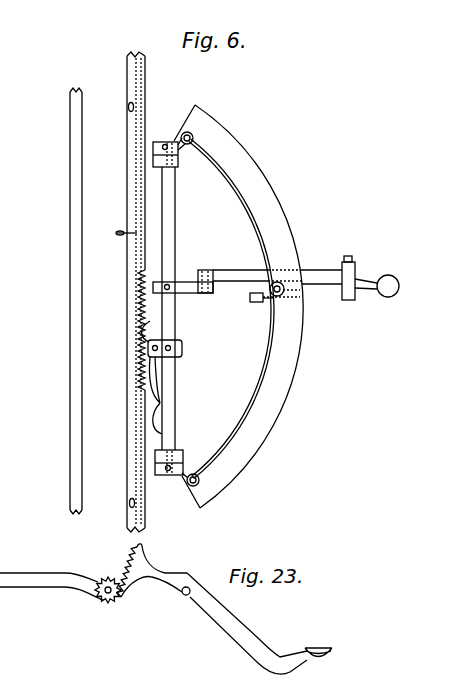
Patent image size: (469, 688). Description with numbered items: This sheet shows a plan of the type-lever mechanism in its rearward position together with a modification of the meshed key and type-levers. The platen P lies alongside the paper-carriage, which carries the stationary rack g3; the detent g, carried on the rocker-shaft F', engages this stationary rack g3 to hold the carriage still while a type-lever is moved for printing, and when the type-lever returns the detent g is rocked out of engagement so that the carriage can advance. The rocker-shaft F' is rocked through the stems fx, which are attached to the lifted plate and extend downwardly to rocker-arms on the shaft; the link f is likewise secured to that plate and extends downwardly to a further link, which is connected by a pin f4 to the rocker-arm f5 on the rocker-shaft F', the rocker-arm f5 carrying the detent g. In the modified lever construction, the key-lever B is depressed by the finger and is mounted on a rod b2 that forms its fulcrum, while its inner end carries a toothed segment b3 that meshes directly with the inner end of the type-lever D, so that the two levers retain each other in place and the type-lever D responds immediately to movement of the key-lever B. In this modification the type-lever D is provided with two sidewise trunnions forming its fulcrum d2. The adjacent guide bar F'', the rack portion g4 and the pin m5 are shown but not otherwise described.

In FIG. 6, the platen P is at (70, 380).
In FIG. 6, the stationary rack g3 is at (136, 72).
In FIG. 6, the rack teeth g4 is at (132, 268).
In FIG. 6, the detent g is at (170, 341).
In FIG. 6, the vertical guide bar F'' is at (181, 308).
In FIG. 6, the rocker-shaft F' is at (238, 306).
In FIG. 6, the pin f4 is at (181, 154).
In FIG. 6, the rocker-arm f5 is at (190, 288).
In FIG. 6, the pin m5 is at (165, 145).
In FIG. 6, the stem fx is at (186, 132).
In FIG. 6, the key-lever B is at (328, 290).
In FIG. 23, the key-lever B is at (248, 632).
In FIG. 6, the link f is at (271, 298).
In FIG. 6, the type-lever D is at (252, 300).
In FIG. 23, the type-lever D is at (51, 581).
In FIG. 23, the fulcrum of the type-lever d2 is at (106, 596).
In FIG. 23, the toothed segment b3 is at (137, 547).
In FIG. 23, the rod forming the fulcrum of the key-lever b2 is at (184, 594).